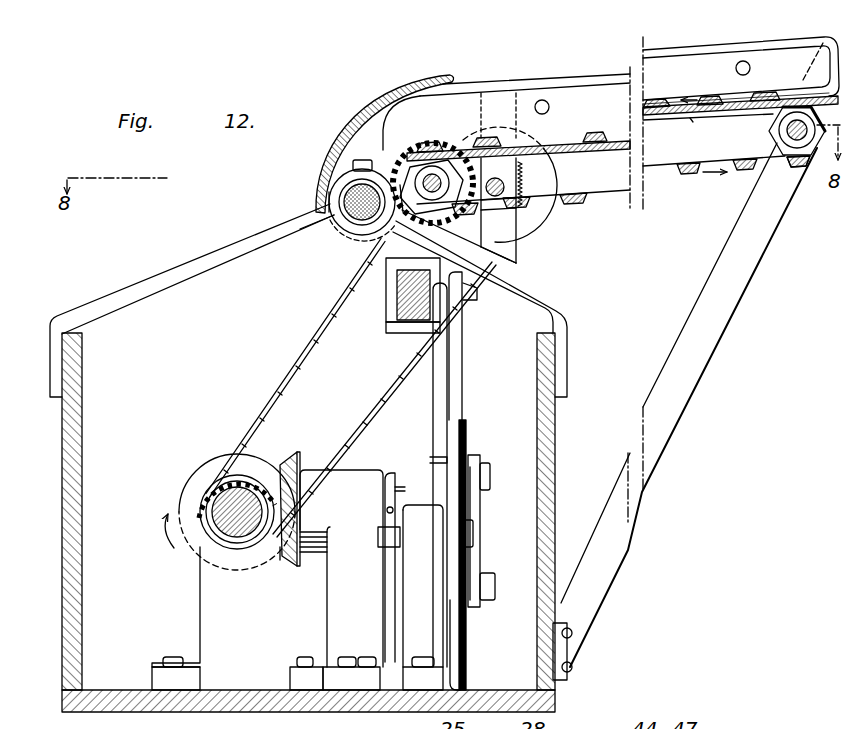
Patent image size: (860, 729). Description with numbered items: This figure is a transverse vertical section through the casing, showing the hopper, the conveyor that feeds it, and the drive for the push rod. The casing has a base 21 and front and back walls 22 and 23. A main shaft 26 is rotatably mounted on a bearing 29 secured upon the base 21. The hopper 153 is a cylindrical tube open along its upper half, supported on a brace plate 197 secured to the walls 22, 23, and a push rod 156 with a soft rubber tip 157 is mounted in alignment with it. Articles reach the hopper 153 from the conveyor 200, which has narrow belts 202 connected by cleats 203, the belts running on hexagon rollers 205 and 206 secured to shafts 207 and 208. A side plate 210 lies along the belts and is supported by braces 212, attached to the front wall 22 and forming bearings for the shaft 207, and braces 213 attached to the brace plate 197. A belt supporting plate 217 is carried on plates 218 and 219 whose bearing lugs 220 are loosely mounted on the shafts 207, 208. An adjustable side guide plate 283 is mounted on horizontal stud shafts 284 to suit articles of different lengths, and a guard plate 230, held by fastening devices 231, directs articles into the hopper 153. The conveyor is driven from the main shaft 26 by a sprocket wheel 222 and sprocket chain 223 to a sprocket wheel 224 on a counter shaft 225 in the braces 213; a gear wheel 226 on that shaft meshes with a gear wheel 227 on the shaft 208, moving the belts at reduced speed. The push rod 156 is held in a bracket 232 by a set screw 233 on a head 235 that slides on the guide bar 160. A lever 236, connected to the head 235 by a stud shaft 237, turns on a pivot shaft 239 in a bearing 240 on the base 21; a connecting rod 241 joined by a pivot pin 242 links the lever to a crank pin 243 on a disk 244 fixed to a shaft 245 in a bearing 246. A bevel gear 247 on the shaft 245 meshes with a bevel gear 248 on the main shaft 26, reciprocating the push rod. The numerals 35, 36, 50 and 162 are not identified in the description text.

The base 21 is at (97, 707).
The front wall 22 is at (555, 452).
The back wall 23 is at (62, 519).
The main shaft 26 is at (153, 506).
The bearing 29 is at (200, 605).
The base 35 is at (380, 719).
The frame 36 is at (722, 727).
The frame member 50 is at (740, 719).
The hopper 153 is at (333, 183).
The push rod 156 is at (343, 186).
The tip 157 is at (349, 199).
The guide bar 160 is at (408, 334).
The upright plate 162 is at (447, 407).
The brace plate 197 is at (184, 274).
The conveyor 200 is at (518, 84).
The conveyor belt 202 is at (568, 120).
The cleats 203 is at (597, 132).
The hexagon roller 205 is at (770, 133).
The hexagon roller 206 is at (448, 165).
The shaft 207 is at (808, 160).
The shaft 208 is at (388, 128).
The side plate 210 is at (833, 36).
The braces 212 is at (748, 278).
The braces 213 is at (518, 271).
The belt supporting plate 217 is at (525, 183).
The plate 218 is at (778, 114).
The plate 219 is at (401, 158).
The bearing lugs 220 is at (400, 165).
The sprocket wheel 222 is at (252, 475).
The sprocket chain 223 is at (307, 352).
The sprocket wheel 224 is at (533, 233).
The counter shaft 225 is at (560, 197).
The gear wheel 226 is at (551, 165).
The gear wheel 227 is at (401, 150).
The guard plate 230 is at (395, 98).
The fastening devices 231 is at (302, 229).
The bracket 232 is at (328, 192).
The set screw 233 is at (355, 160).
The head 235 is at (390, 310).
The lever 236 is at (464, 382).
The stud shaft 237 is at (470, 304).
The pivot shaft 239 is at (402, 547).
The bearing 240 is at (407, 618).
The connecting rod 241 is at (477, 513).
The pivot pin 242 is at (492, 593).
The crank pin 243 is at (490, 467).
The disk 244 is at (468, 441).
The shaft 245 is at (408, 492).
The bearing 246 is at (330, 578).
The bevel gear 247 is at (298, 463).
The bevel gear 248 is at (210, 455).
The adjustable side guide plate 283 is at (775, 47).
The horizontal stud shafts 284 is at (542, 100).